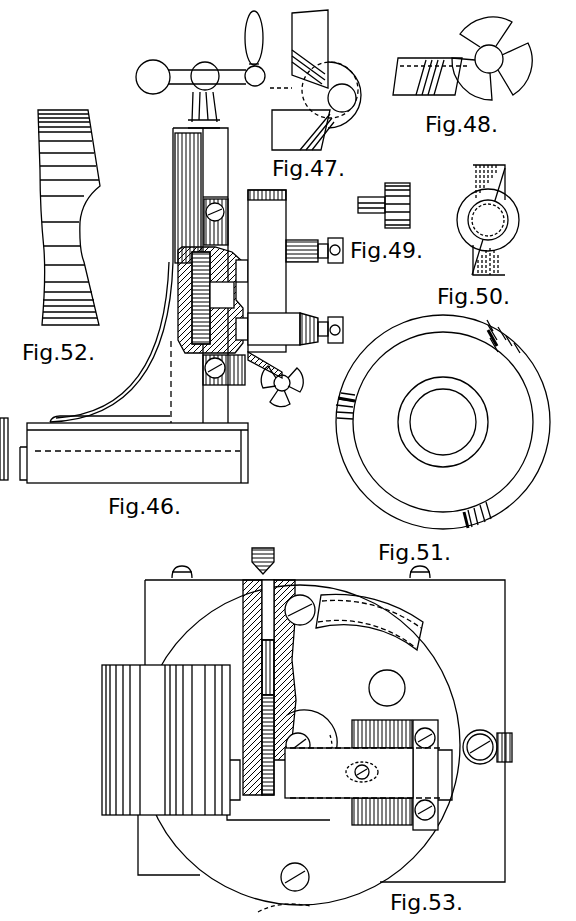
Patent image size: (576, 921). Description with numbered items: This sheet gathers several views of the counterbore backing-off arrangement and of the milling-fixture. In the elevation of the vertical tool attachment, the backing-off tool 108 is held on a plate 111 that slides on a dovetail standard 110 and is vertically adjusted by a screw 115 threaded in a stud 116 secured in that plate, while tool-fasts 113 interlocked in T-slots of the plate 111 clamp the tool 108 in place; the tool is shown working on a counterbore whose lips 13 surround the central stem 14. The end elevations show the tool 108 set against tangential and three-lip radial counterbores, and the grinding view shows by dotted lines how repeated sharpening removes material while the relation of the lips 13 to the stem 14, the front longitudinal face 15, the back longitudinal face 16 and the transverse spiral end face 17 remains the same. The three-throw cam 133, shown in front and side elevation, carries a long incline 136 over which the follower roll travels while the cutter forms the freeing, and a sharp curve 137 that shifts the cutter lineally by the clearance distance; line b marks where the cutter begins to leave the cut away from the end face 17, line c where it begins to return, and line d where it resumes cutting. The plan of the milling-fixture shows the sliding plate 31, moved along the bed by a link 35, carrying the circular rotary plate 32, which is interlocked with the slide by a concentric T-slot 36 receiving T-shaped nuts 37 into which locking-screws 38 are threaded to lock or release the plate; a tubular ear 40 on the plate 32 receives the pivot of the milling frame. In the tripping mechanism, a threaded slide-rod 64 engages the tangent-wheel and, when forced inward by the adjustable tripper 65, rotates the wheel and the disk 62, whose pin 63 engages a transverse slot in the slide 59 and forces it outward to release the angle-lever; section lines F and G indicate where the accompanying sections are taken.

In FIG. 46, the lips 13 is at (268, 396).
In FIG. 47, the lips 13 is at (348, 131).
In FIG. 48, the lips 13 is at (500, 58).
In FIG. 46, the stem 14 is at (269, 371).
In FIG. 47, the stem 14 is at (315, 95).
In FIG. 48, the stem 14 is at (489, 59).
In FIG. 50, the stem 14 is at (488, 220).
In FIG. 50, the front longitudinal face 15 is at (506, 168).
In FIG. 50, the back longitudinal face 16 is at (520, 206).
In FIG. 50, the transverse spiral face 17 is at (488, 221).
In FIG. 53, the sliding plate 31 is at (325, 724).
In FIG. 53, the circular rotary plate 32 is at (299, 748).
In FIG. 53, the link 35 is at (508, 740).
In FIG. 53, the concentric T-slot 36 is at (369, 622).
In FIG. 53, the T-shaped nuts 37 is at (320, 604).
In FIG. 53, the locking-screws 38 is at (300, 622).
In FIG. 53, the tubular ear 40 is at (157, 740).
In FIG. 53, the slide 59 is at (462, 800).
In FIG. 53, the disk 62 is at (311, 744).
In FIG. 53, the pin 63 is at (308, 770).
In FIG. 53, the threaded slide-rod 64 is at (280, 578).
In FIG. 53, the adjustable tripper 65 is at (262, 553).
In FIG. 46, the backing-off tool 108 is at (267, 271).
In FIG. 47, the backing-off tool 108 is at (303, 80).
In FIG. 48, the backing-off tool 108 is at (431, 76).
In FIG. 46, the dovetail standard 110 is at (200, 275).
In FIG. 46, the plate 111 is at (227, 370).
In FIG. 46, the tool-fasts 113 is at (300, 240).
In FIG. 46, the screw 115 is at (216, 96).
In FIG. 46, the stud 116 is at (176, 262).
In FIG. 52, the cam 133 is at (60, 196).
In FIG. 51, the cam 133 is at (443, 422).
In FIG. 52, the long incline 136 is at (90, 118).
In FIG. 52, the sharp curve 137 is at (94, 196).
In FIG. 52, the line b is at (82, 218).
In FIG. 51, the line b is at (505, 540).
In FIG. 52, the line c is at (100, 190).
In FIG. 51, the line c is at (476, 552).
In FIG. 52, the line d is at (101, 173).
In FIG. 51, the line d is at (456, 562).
In FIG. 53, the line F F is at (160, 735).
In FIG. 53, the line G G is at (297, 905).